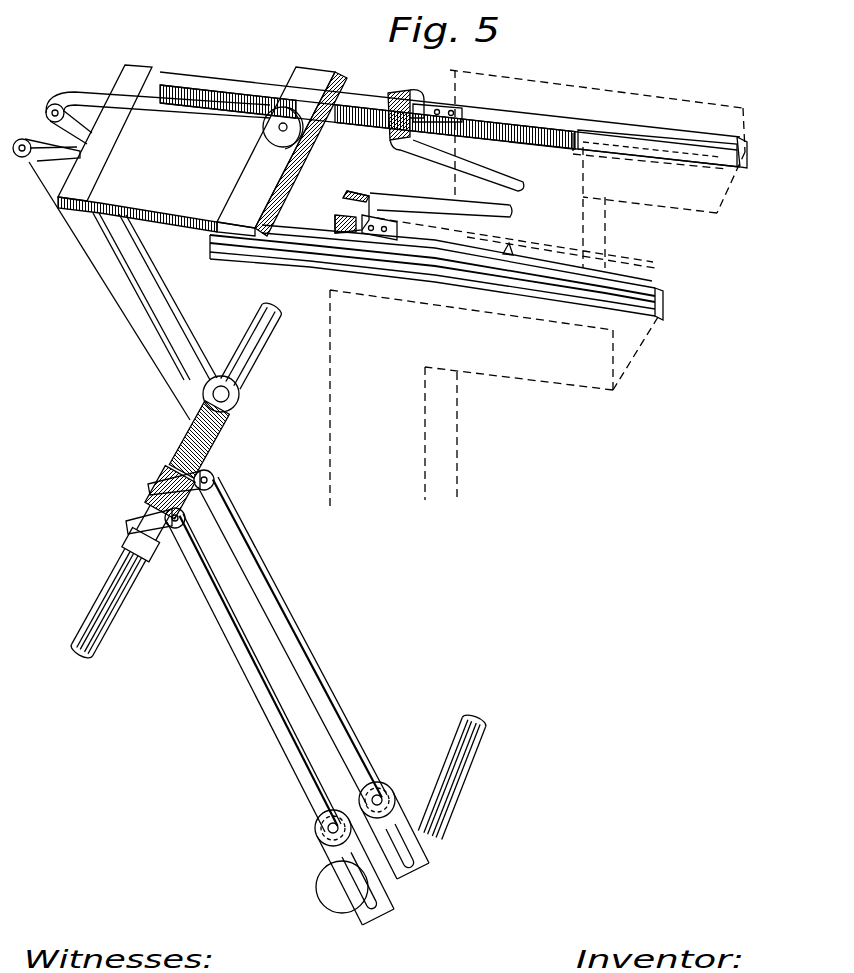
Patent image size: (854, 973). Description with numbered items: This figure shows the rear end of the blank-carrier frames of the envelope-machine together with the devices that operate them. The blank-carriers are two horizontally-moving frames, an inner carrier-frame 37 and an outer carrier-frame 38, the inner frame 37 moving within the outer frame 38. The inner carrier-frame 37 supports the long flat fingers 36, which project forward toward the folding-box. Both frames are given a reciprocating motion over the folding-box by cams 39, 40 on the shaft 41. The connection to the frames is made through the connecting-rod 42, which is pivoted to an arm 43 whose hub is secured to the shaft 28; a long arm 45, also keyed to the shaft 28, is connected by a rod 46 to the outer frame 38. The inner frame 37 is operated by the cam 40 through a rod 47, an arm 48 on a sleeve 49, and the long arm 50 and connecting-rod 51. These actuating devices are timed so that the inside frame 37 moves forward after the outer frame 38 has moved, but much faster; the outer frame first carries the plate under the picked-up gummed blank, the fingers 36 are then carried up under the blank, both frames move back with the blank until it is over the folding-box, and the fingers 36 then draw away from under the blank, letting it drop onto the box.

The shaft 28 is at (252, 359).
The long flat fingers 36 is at (429, 165).
The inner carrier-frame 37 is at (202, 150).
The outer carrier-frame 38 is at (302, 262).
The cam 39 is at (324, 894).
The cam 40 is at (432, 827).
The shaft 41 is at (458, 748).
The connecting-rod 42 is at (268, 717).
The arm 43 is at (166, 535).
The long arm 45 is at (175, 297).
The rod 46 is at (158, 118).
The rod 47 is at (302, 647).
The arm 48 is at (209, 468).
The sleeve 49 is at (206, 438).
The long arm 50 is at (110, 294).
The connecting-rod 51 is at (46, 138).